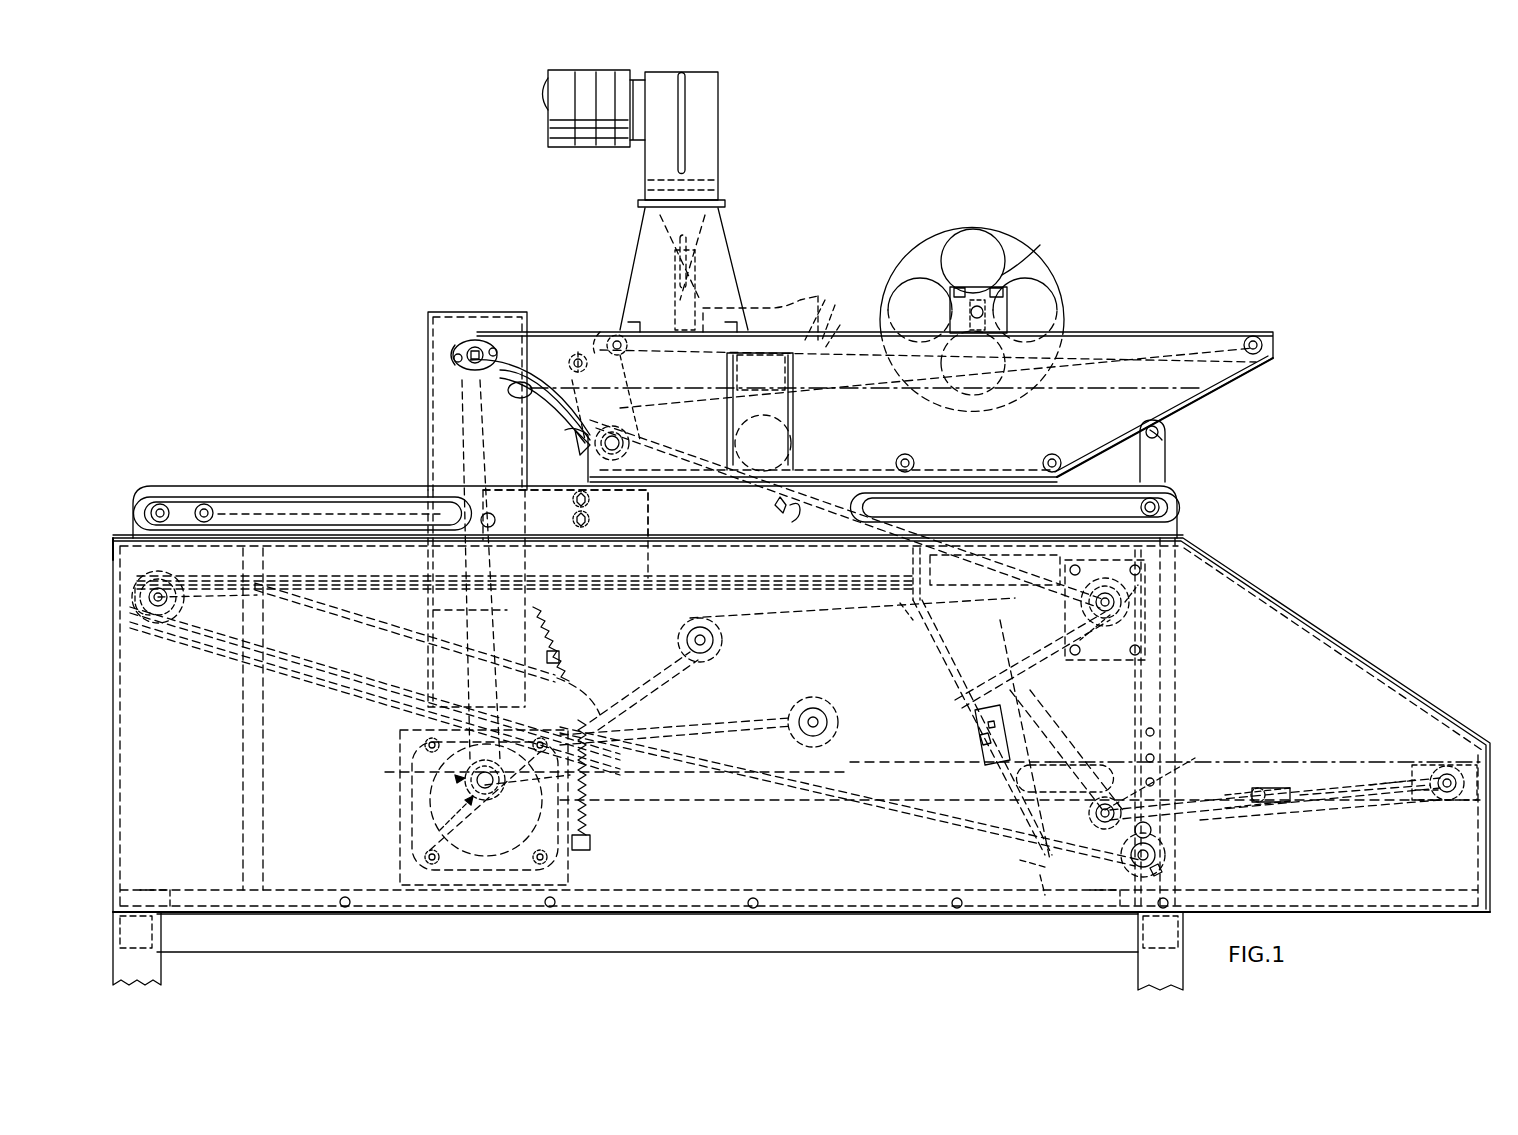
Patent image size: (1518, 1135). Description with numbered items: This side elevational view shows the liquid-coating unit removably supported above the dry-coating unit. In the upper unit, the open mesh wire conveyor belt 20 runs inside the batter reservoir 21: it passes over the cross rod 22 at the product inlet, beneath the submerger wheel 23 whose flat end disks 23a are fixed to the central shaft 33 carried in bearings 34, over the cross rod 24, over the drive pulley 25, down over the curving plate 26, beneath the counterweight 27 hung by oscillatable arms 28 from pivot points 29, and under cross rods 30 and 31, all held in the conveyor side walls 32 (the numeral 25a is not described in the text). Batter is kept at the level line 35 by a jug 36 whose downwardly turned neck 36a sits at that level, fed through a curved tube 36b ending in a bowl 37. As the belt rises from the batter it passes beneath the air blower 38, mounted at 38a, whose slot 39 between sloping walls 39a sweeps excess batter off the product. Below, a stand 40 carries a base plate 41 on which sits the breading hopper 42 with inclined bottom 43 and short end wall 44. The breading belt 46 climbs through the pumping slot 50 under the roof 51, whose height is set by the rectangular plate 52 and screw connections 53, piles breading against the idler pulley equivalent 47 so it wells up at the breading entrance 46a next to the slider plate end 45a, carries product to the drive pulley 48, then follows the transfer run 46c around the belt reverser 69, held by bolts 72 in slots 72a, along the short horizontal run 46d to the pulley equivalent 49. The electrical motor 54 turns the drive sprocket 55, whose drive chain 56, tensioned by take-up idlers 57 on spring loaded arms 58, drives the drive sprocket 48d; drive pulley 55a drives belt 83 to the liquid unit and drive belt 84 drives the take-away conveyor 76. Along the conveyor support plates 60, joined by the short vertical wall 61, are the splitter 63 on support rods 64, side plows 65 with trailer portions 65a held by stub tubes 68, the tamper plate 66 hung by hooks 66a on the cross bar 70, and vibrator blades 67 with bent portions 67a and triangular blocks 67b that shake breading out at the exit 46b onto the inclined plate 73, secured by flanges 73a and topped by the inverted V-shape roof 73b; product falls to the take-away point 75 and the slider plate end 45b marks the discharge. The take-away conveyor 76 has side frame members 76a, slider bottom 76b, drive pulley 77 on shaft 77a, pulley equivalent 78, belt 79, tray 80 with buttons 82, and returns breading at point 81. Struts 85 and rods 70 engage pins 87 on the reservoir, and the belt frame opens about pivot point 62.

The open mesh wire conveyor belt 20 is at (1170, 358).
The batter reservoir 21 is at (1004, 440).
The cross rod 22 is at (1265, 345).
The submerger wheel 23 is at (1045, 228).
The flat end disks 23a is at (1067, 258).
The cross rod 24 is at (603, 340).
The drive pulley 25 is at (475, 349).
The bearing bracket 25a is at (455, 350).
The curving plate 26 is at (535, 380).
The counterweight 27 is at (630, 448).
The oscillatable arms 28 is at (598, 372).
The pivot points 29 is at (575, 343).
The cross rod 30 is at (928, 458).
The cross rod 31 is at (1044, 457).
The conveyor side walls 32 is at (1105, 358).
The central shaft 33 is at (982, 314).
The bearings 34 is at (993, 295).
The batter level line 35 is at (847, 340).
The jug of batter 36 is at (759, 309).
The downwardly turned neck 36a is at (737, 377).
The curved tube 36b is at (793, 429).
The bowl 37 is at (828, 322).
The air blower 38 is at (613, 142).
The blower support 38a is at (720, 273).
The slot 39 is at (702, 296).
The sloping walls 39a is at (670, 277).
The stand 40 is at (1133, 962).
The base plate 41 is at (752, 896).
The breading material storage hopper 42 is at (847, 672).
The inclined bottom 43 is at (713, 780).
The short end wall 44 is at (108, 550).
The upstream end of slider plate 45a is at (330, 600).
The product-discharge end of slider plate 45b is at (935, 600).
The open mesh wire conveyor belt 46 is at (655, 578).
The breading entrance 46a is at (198, 580).
The breading exit 46b is at (1050, 569).
The transfer run 46c is at (1148, 628).
The short horizontal run 46d is at (1045, 890).
The idler pulley equivalent 47 is at (165, 612).
The drive pulley 48 is at (1148, 583).
The drive sprocket 48d is at (1148, 605).
The pulley equivalent 49 is at (1153, 834).
The pumping slot 50 is at (390, 662).
The roof 51 is at (330, 623).
The rectangular plate 52 is at (578, 635).
The screw connections 53 is at (588, 633).
The electrical motor 54 is at (420, 827).
The drive sprocket 55 is at (455, 772).
The drive pulley 55a is at (443, 835).
The drive chain 56 is at (784, 608).
The take-up idlers 57 is at (711, 658).
The spring loaded oscillatable arms 58 is at (640, 716).
The conveyor support plates 60 is at (340, 494).
The short vertical wall 61 is at (910, 603).
The pivot point 62 is at (1163, 863).
The splitter 63 is at (283, 514).
The support rods 64 is at (195, 494).
The side plows 65 is at (495, 490).
The trailer portion 65a is at (957, 562).
The tamper plate 66 is at (692, 516).
The hooks 66a is at (577, 515).
The vibrator blades 67 is at (837, 552).
The bent portion 67a is at (573, 440).
The triangular block 67b is at (998, 622).
The stub tube 68 is at (810, 508).
The belt reverser 69 is at (1058, 735).
The cross bar 70 is at (1165, 425).
The bolts 72 is at (1015, 805).
The slots 72a is at (1075, 766).
The inclined plate 73 is at (988, 728).
The flanges 73a is at (958, 733).
The inverted V-shape roof 73b is at (1005, 670).
The take-away point 75 is at (1165, 730).
The take-away conveyor 76 is at (1290, 767).
The side frame members 76a is at (1340, 755).
The slider bottom 76b is at (1310, 823).
The drive pulley 77 is at (1445, 770).
The shaft 77a is at (1413, 792).
The pulley equivalent 78 is at (1168, 760).
The conveyor belt 79 is at (1370, 771).
The tray 80 is at (1212, 780).
The return point 81 is at (1098, 818).
The triangular shaped buttons 82 is at (1265, 780).
The drive belt 83 is at (460, 440).
The drive belt 84 is at (658, 808).
The struts 85 is at (1165, 462).
The pins 87 is at (1165, 440).